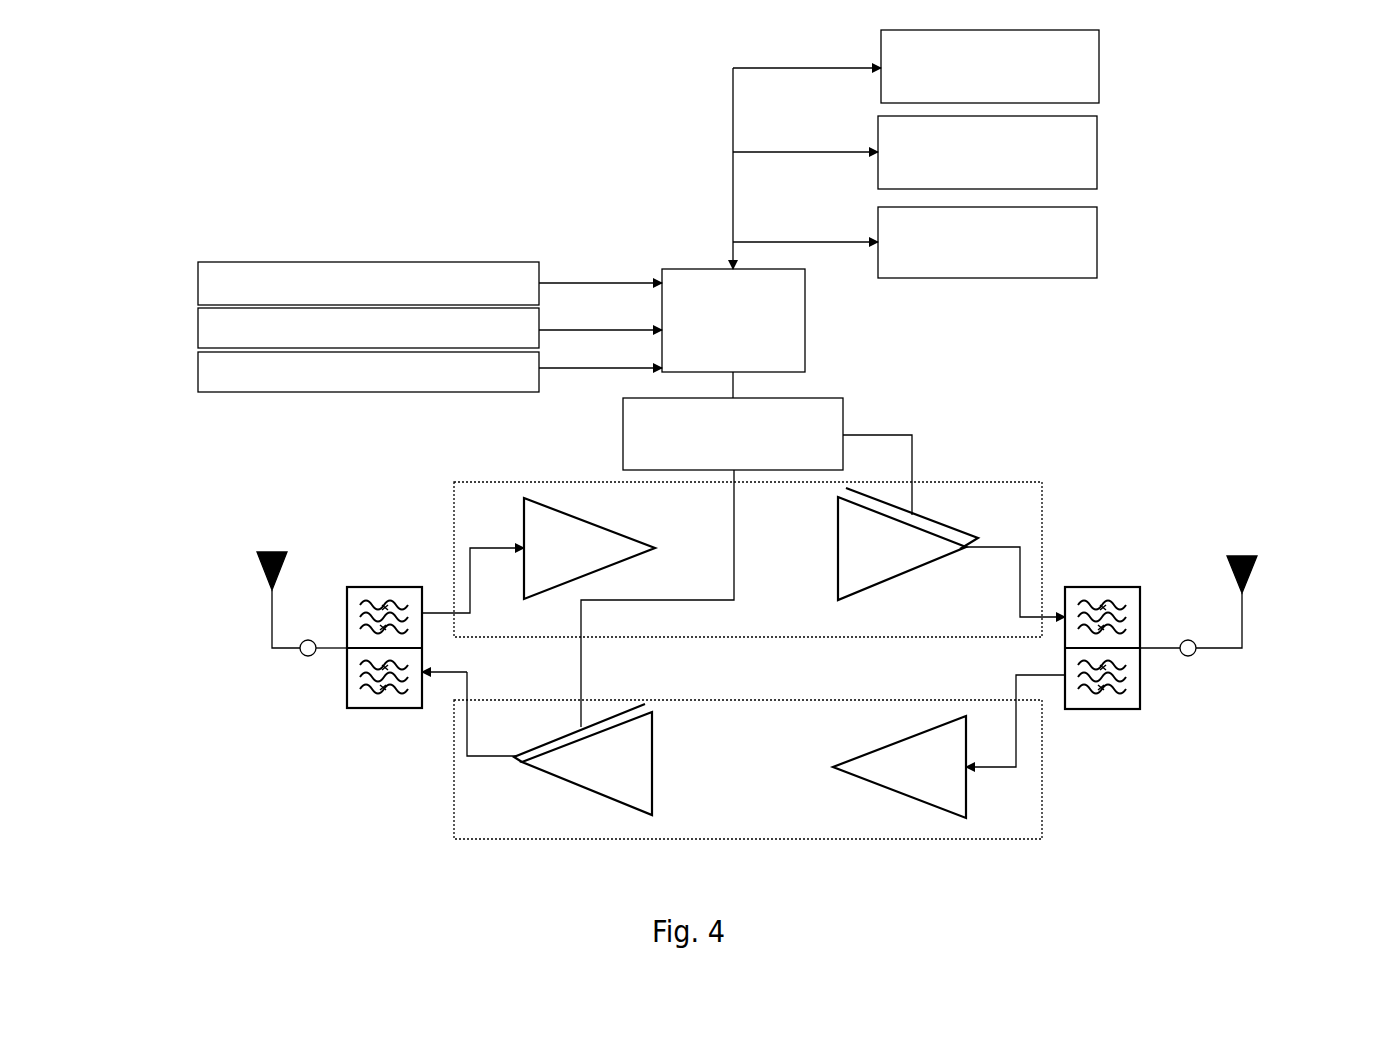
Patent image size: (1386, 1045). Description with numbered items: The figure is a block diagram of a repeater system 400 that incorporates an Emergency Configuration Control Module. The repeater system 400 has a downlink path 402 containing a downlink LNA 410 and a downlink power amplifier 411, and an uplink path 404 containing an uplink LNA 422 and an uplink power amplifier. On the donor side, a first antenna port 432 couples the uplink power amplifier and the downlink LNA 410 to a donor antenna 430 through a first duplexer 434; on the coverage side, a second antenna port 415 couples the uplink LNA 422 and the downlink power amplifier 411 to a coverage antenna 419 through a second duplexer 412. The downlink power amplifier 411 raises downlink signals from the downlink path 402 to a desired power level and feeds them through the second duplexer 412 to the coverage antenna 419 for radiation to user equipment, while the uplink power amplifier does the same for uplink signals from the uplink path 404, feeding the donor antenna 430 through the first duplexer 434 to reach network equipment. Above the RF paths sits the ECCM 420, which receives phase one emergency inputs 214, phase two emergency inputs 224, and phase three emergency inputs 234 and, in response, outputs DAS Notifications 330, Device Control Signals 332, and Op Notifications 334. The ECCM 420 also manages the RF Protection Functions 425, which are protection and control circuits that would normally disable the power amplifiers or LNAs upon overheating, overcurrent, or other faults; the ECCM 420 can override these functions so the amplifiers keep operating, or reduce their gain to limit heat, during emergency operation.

The repeater system 400 is at (428, 148).
The phase one emergency inputs 214 is at (198, 282).
The phase two emergency inputs 224 is at (198, 326).
The phase three emergency inputs 234 is at (198, 366).
The DAS Notifications 330 is at (990, 66).
The Device Control Signals 332 is at (987, 152).
The Op Notifications 334 is at (987, 242).
The ECCM 420 is at (558, 812).
The RF Protection Functions 425 is at (733, 434).
The downlink path 402 is at (1044, 493).
The uplink path 404 is at (1044, 829).
The downlink LNA 410 is at (610, 527).
The downlink power amplifier 411 is at (898, 578).
The uplink LNA 422 is at (907, 793).
The first duplexer 434 is at (385, 708).
The second duplexer 412 is at (1101, 709).
The donor antenna 430 is at (270, 552).
The first antenna port 432 is at (303, 660).
The coverage antenna 419 is at (1250, 551).
The second antenna port 415 is at (1195, 657).